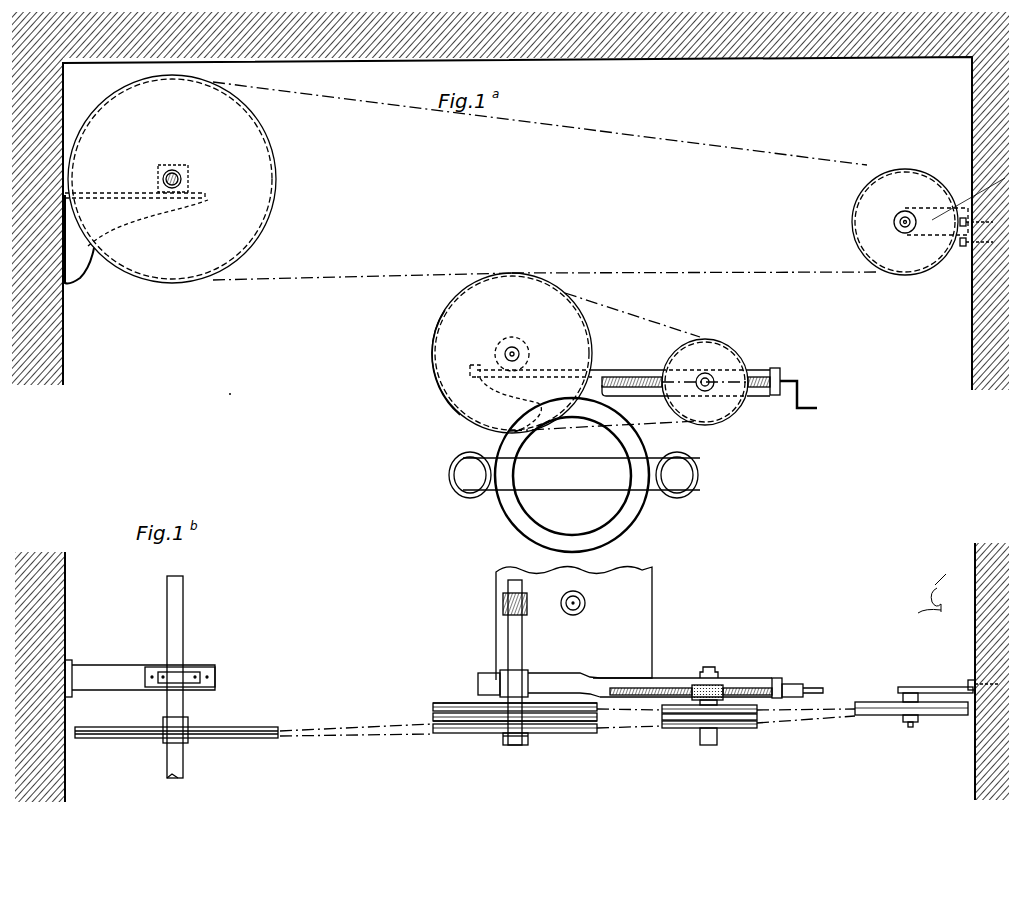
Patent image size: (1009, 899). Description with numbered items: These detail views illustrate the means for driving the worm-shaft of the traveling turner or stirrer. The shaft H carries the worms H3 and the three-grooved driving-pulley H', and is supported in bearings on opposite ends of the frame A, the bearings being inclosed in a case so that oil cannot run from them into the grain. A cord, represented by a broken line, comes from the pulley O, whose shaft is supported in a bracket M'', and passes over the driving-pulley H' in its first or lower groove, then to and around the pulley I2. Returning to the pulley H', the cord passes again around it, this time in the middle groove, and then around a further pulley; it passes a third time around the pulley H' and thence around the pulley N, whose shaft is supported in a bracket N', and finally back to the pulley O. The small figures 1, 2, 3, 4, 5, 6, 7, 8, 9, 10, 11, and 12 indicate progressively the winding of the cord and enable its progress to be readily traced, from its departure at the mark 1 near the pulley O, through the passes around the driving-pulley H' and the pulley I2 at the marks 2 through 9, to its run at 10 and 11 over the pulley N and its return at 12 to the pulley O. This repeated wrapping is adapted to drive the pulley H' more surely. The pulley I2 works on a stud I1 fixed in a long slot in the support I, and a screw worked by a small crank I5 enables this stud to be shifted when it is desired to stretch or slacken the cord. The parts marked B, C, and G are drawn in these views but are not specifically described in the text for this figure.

In FIG. 1a, the cord winding index 1 is at (360, 286).
In FIG. 1b, the cord winding index 1 is at (356, 741).
In FIG. 1a, the cord winding index 2 is at (512, 344).
In FIG. 1b, the cord winding index 2 is at (522, 742).
In FIG. 1a, the cord winding index 3 is at (705, 376).
In FIG. 1b, the cord winding index 3 is at (709, 722).
In FIG. 1a, the cord winding index 4 is at (678, 430).
In FIG. 1a, the cord winding index 5 is at (555, 435).
In FIG. 1a, the cord winding index 6 is at (434, 331).
In FIG. 1b, the cord winding index 6 is at (508, 720).
In FIG. 1a, the cord winding index 7 is at (632, 315).
In FIG. 1b, the cord winding index 7 is at (629, 716).
In FIG. 1a, the cord winding index 8 is at (630, 433).
In FIG. 1a, the cord winding index 9 is at (449, 393).
In FIG. 1b, the cord winding index 9 is at (508, 706).
In FIG. 1a, the cord winding index 10 is at (696, 268).
In FIG. 1b, the cord winding index 10 is at (629, 707).
In FIG. 1a, the cord winding index 11 is at (743, 150).
In FIG. 1b, the cord winding index 11 is at (806, 717).
In FIG. 1a, the cord winding index 12 is at (406, 101).
In FIG. 1b, the cord winding index 12 is at (356, 723).
In FIG. 1a, the pulley O is at (172, 179).
In FIG. 1b, the pulley O is at (245, 727).
In FIG. 1a, the bracket M'' is at (136, 238).
In FIG. 1b, the bracket M'' is at (140, 678).
In FIG. 1a, the pulley N is at (928, 233).
In FIG. 1b, the pulley N is at (911, 716).
In FIG. 1b, the bracket N' is at (933, 687).
In FIG. 1a, the driving-pulley H' is at (512, 353).
In FIG. 1b, the driving-pulley H' is at (515, 727).
In FIG. 1b, the shaft H is at (539, 662).
In FIG. 1a, the worms H3 is at (531, 383).
In FIG. 1b, the worms H3 is at (524, 603).
In FIG. 1a, the support I is at (681, 374).
In FIG. 1b, the support I is at (691, 688).
In FIG. 1a, the stud I1 is at (681, 383).
In FIG. 1b, the stud I1 is at (691, 683).
In FIG. 1a, the pulley I2 is at (703, 370).
In FIG. 1a, the crank I5 is at (798, 388).
In FIG. 1b, the crank I5 is at (802, 685).
In FIG. 1a, the frame A is at (572, 475).
In FIG. 1b, the frame A is at (574, 624).
In FIG. 1a, the cross bar B is at (581, 474).
In FIG. 1a, the end rings C is at (568, 475).
In FIG. 1b, the pivot G is at (579, 601).